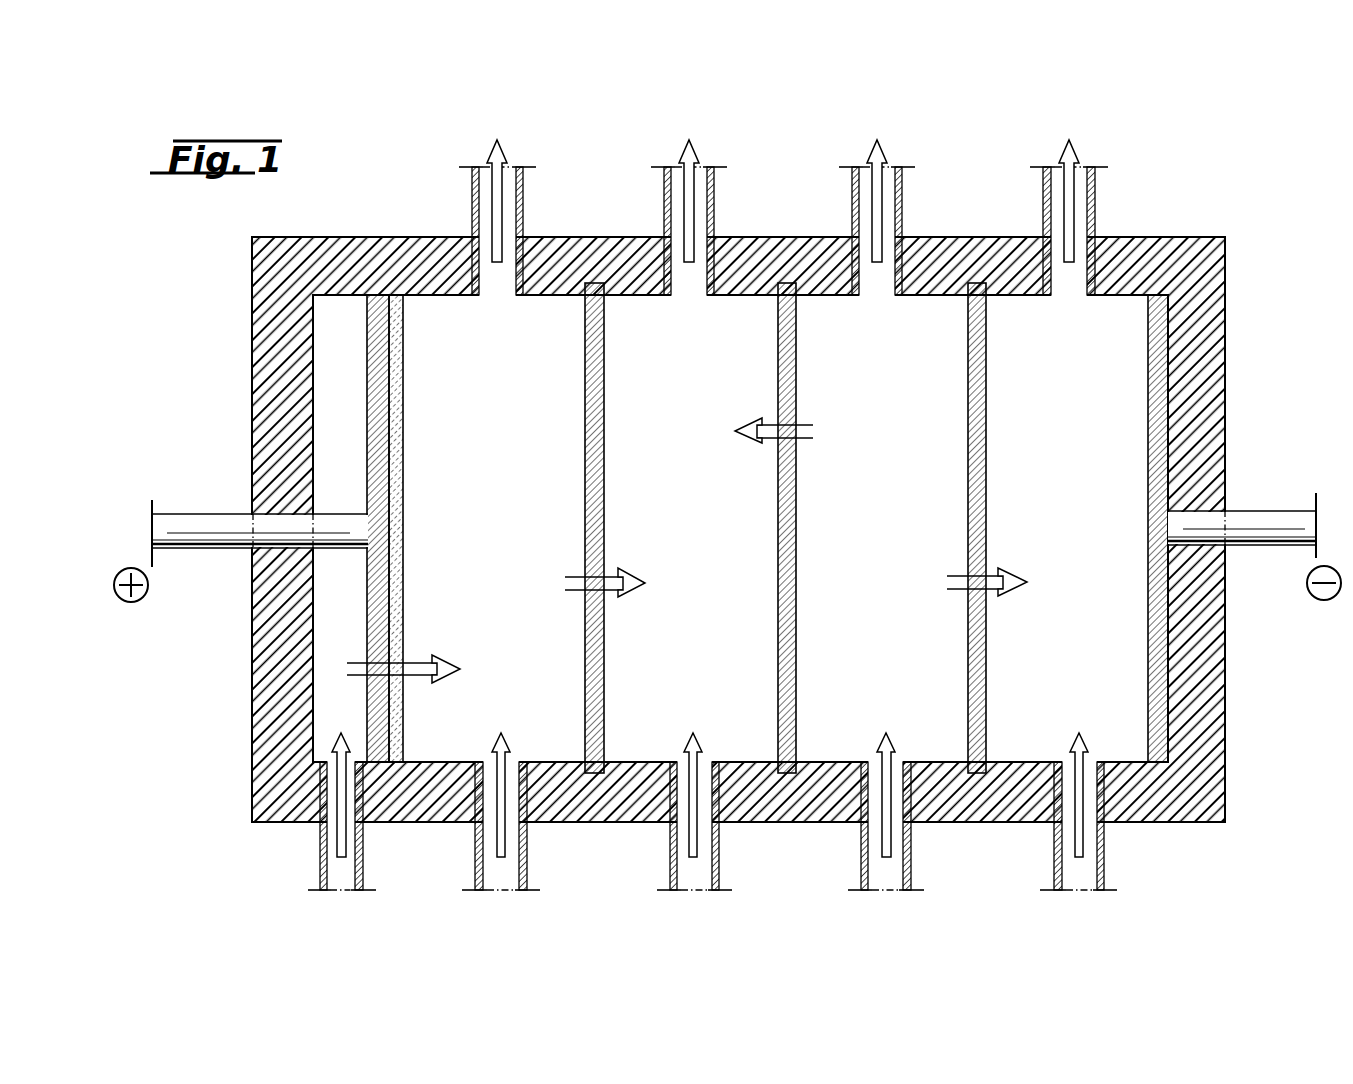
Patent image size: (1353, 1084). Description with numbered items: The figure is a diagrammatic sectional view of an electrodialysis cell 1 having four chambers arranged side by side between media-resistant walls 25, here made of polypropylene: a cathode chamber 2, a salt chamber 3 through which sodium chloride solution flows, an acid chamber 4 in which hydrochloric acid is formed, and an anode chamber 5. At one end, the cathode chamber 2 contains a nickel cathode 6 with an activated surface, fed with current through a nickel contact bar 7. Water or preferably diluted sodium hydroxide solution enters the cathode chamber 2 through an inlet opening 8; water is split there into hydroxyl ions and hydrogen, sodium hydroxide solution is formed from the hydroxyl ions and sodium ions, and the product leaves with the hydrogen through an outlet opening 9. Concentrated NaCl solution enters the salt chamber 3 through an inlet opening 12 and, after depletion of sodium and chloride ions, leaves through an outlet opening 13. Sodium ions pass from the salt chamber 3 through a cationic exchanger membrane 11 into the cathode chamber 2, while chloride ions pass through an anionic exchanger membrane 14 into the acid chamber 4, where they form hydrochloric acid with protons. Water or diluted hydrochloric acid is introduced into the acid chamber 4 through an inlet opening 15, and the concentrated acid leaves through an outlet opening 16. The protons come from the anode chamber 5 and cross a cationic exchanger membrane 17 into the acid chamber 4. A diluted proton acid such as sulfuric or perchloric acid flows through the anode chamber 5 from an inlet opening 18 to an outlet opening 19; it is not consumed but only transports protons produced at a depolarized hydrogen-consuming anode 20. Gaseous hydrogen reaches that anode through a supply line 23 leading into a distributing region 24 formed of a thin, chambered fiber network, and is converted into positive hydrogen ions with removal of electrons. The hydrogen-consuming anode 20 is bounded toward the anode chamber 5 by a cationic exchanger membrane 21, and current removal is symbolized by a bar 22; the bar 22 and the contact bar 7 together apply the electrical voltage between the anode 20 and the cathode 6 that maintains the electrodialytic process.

The electrodialysis cell 1 is at (1268, 211).
The cathode chamber 2 is at (1081, 504).
The salt chamber 3 is at (896, 504).
The acid chamber 4 is at (698, 504).
The anode chamber 5 is at (508, 504).
The cathode 6 is at (1155, 400).
The contact bar 7 is at (1273, 525).
The inlet opening 8 is at (1092, 762).
The outlet opening 9 is at (1072, 288).
The cationic exchanger membrane 11 is at (975, 400).
The inlet opening 12 is at (898, 766).
The outlet opening 13 is at (880, 288).
The anionic exchanger membrane 14 is at (786, 400).
The inlet opening 15 is at (707, 768).
The outlet opening 16 is at (689, 288).
The cationic exchanger membrane 17 is at (592, 400).
The inlet opening 18 is at (515, 762).
The outlet opening 19 is at (499, 288).
The hydrogen-consuming anode 20 is at (403, 548).
The cationic exchanger membrane 21 is at (393, 437).
The bar 22 is at (200, 522).
The supply line 23 is at (350, 758).
The distributing region 24 is at (358, 443).
The walls 25 is at (780, 250).